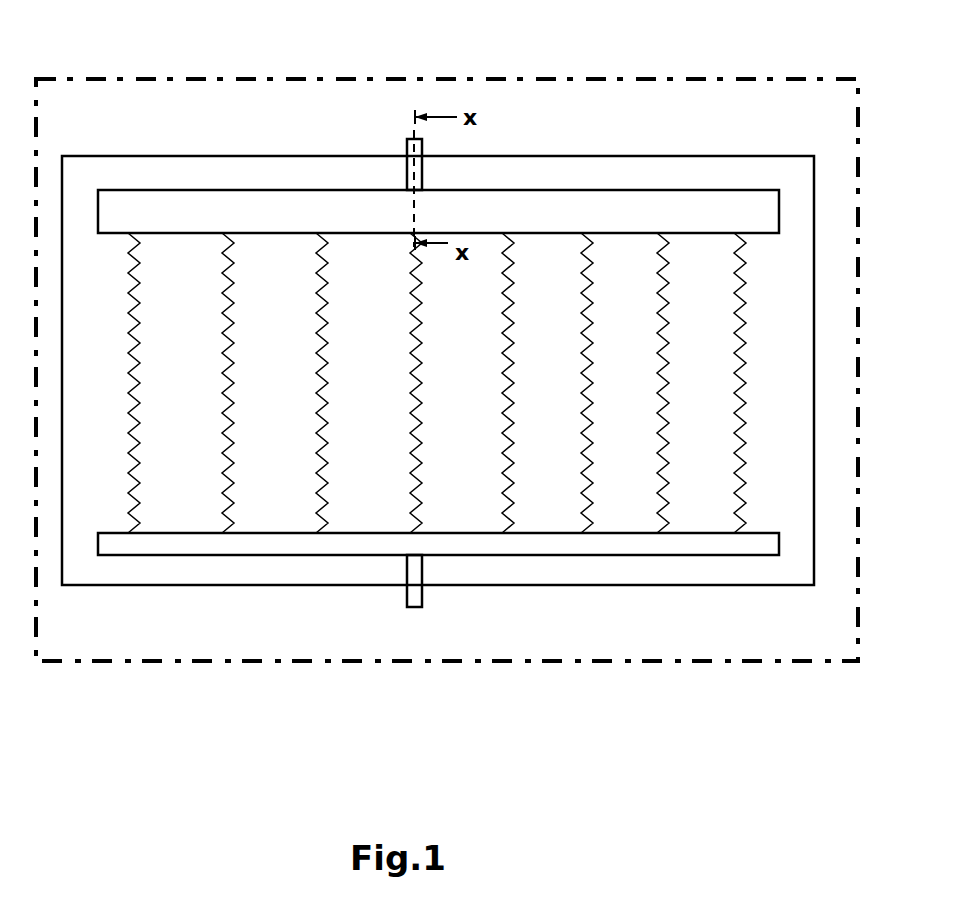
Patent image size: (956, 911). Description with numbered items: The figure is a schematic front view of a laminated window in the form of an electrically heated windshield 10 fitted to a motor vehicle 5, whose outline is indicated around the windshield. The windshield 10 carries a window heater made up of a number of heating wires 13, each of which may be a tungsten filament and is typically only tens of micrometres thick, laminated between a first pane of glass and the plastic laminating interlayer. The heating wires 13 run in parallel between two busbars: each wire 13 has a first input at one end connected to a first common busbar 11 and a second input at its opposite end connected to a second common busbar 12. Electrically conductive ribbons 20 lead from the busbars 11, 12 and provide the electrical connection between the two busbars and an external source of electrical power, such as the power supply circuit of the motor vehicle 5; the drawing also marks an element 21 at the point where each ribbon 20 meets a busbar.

The motor vehicle 5 is at (103, 72).
The electrically heated windshield 10 is at (203, 597).
The first common busbar 11 is at (213, 190).
The second common busbar 12 is at (280, 553).
The heating wires 13 is at (128, 389).
The electrically conductive ribbons 20 is at (395, 165).
The pin / connecting member 21 is at (407, 142).